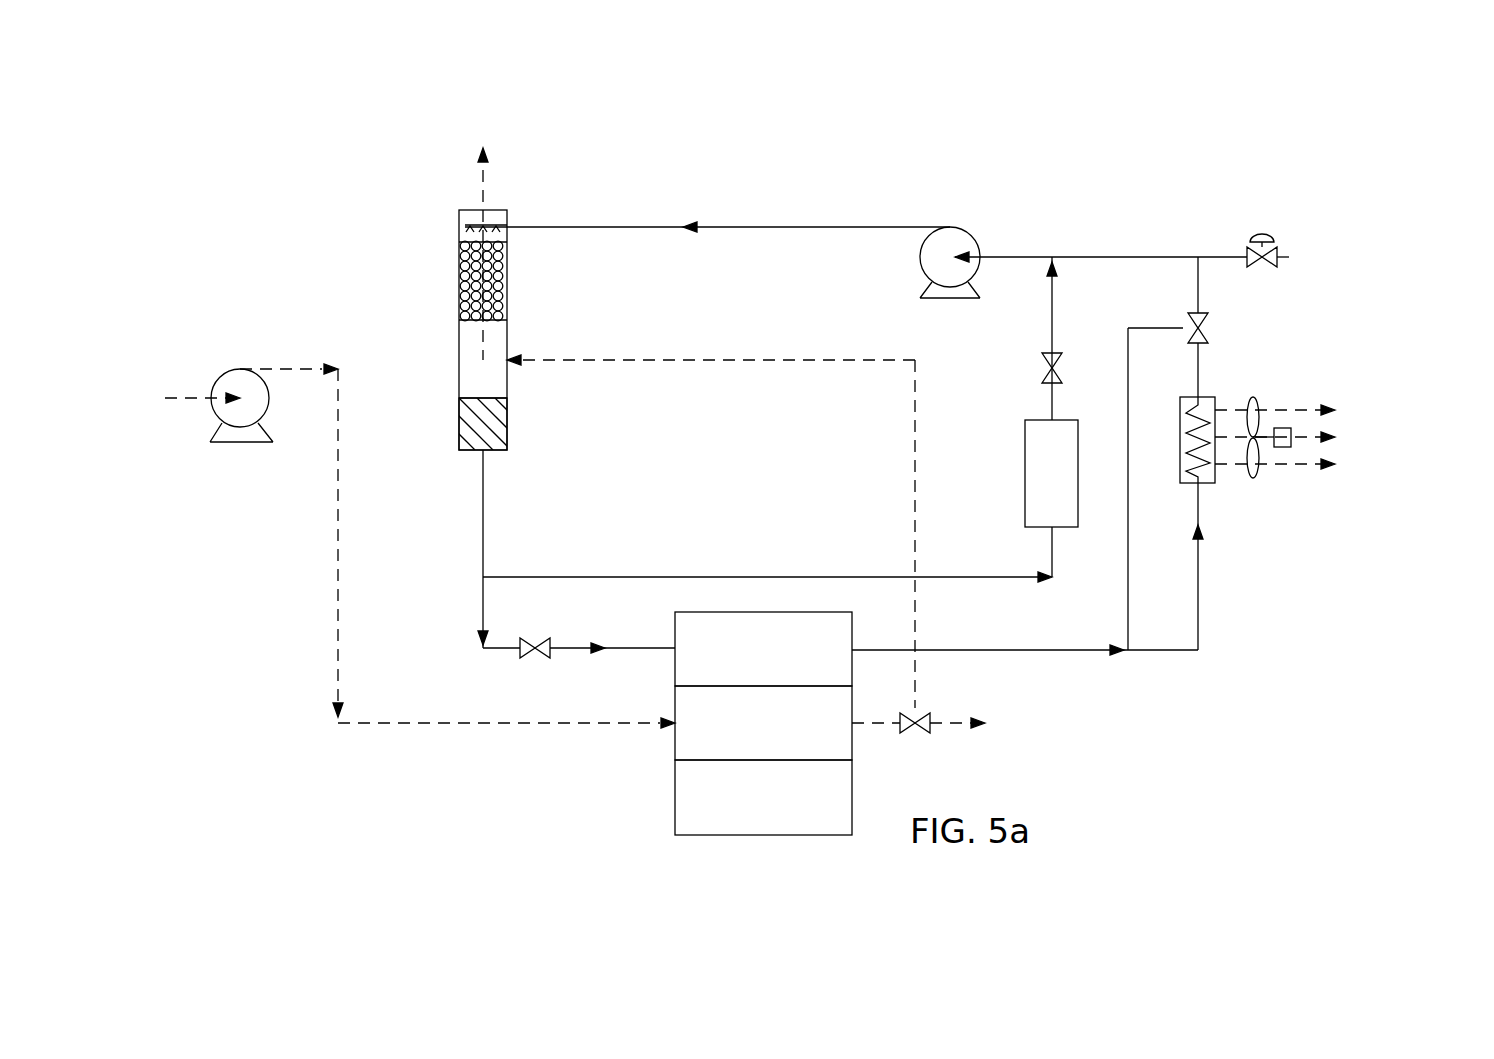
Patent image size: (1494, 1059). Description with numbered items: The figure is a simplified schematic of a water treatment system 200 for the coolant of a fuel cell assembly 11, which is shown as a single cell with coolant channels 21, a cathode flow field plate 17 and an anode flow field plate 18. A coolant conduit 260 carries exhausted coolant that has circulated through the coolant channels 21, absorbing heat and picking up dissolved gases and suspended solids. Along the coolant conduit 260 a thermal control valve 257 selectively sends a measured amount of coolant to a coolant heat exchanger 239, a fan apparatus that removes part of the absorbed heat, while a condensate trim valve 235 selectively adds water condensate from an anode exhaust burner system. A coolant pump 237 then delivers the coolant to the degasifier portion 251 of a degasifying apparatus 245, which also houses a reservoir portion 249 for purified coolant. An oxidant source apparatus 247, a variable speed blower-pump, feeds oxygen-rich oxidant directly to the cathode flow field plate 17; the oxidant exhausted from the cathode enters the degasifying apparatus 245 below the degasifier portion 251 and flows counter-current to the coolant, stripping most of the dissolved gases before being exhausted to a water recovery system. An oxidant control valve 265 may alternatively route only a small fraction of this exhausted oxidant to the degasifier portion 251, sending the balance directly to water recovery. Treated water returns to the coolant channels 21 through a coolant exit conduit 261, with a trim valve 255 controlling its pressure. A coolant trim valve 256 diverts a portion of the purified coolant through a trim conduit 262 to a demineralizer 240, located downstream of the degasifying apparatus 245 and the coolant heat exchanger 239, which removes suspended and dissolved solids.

The water treatment system 200 is at (300, 240).
The degasifying apparatus 245 is at (432, 278).
The degasifier portion 251 is at (498, 280).
The reservoir portion 249 is at (500, 433).
The oxidant source apparatus 247 is at (228, 356).
The coolant pump 237 is at (938, 218).
The coolant conduit 260 is at (760, 227).
The condensate trim valve 235 is at (1280, 228).
The thermal control valve 257 is at (1178, 324).
The coolant heat exchanger 239 is at (1258, 392).
The coolant trim valve 256 is at (1038, 362).
The demineralizer 240 is at (1025, 445).
The coolant exit conduit 261 is at (483, 530).
The trim conduit 262 is at (640, 577).
The trim valve 255 is at (538, 632).
The fuel cell assembly 11 is at (789, 711).
The coolant channels 21 is at (697, 612).
The cathode flow field plate 17 is at (675, 698).
The anode flow field plate 18 is at (675, 808).
The oxidant control valve 265 is at (924, 704).